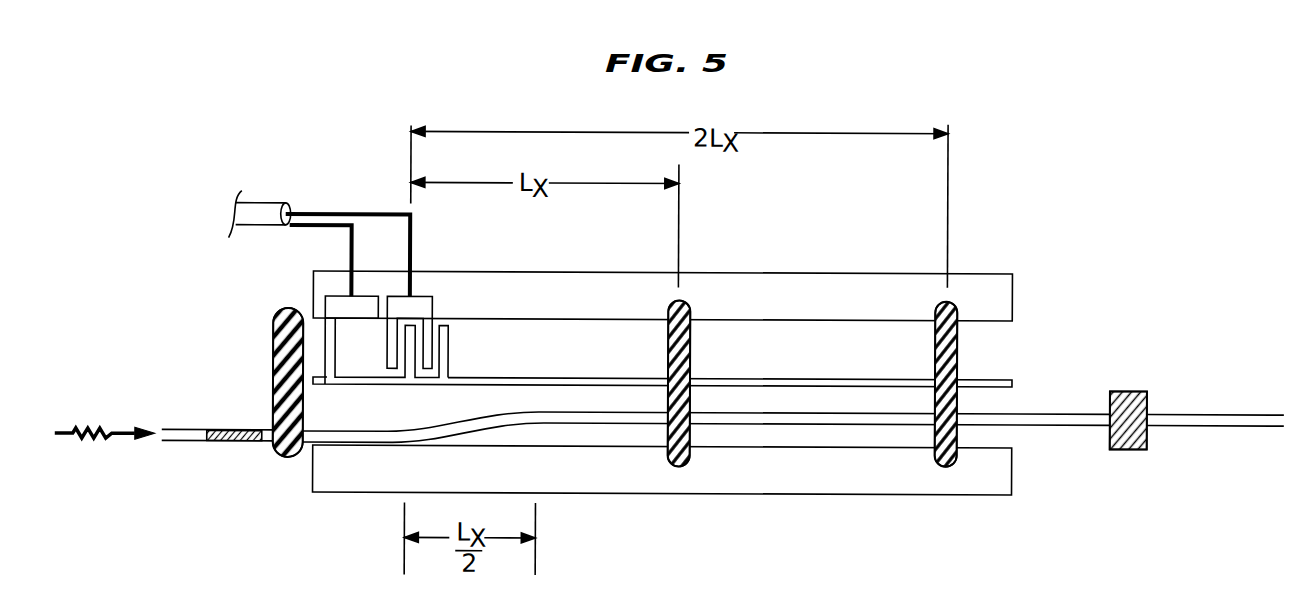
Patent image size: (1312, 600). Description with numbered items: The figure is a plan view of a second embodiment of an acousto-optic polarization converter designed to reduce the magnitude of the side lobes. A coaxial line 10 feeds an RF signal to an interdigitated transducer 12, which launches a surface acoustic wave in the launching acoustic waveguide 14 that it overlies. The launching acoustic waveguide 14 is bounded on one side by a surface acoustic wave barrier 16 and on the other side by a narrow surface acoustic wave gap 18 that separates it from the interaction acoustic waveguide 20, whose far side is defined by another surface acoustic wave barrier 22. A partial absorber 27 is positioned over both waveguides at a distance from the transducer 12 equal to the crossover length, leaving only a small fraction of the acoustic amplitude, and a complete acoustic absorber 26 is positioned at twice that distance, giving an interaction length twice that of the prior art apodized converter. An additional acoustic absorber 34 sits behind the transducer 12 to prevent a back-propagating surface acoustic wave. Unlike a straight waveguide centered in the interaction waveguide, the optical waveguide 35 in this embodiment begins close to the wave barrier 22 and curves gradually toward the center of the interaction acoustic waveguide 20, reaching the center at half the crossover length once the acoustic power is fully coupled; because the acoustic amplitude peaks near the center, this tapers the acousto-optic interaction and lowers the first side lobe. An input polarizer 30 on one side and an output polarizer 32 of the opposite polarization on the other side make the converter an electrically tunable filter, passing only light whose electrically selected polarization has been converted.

The coaxial line 10 is at (267, 203).
The interdigitated transducer 12 is at (425, 262).
The launching acoustic waveguide 14 is at (995, 344).
The surface acoustic wave barrier 16 is at (1012, 287).
The surface acoustic wave gap 18 is at (1009, 384).
The interaction acoustic waveguide 20 is at (1003, 436).
The surface acoustic wave barrier 22 is at (1005, 479).
The complete acoustic absorber 26 is at (950, 465).
The partial absorber 27 is at (678, 465).
The input polarizer 30 is at (243, 429).
The output polarizer 32 is at (1140, 388).
The additional acoustic absorber 34 is at (281, 450).
The optical waveguide 35 is at (182, 438).